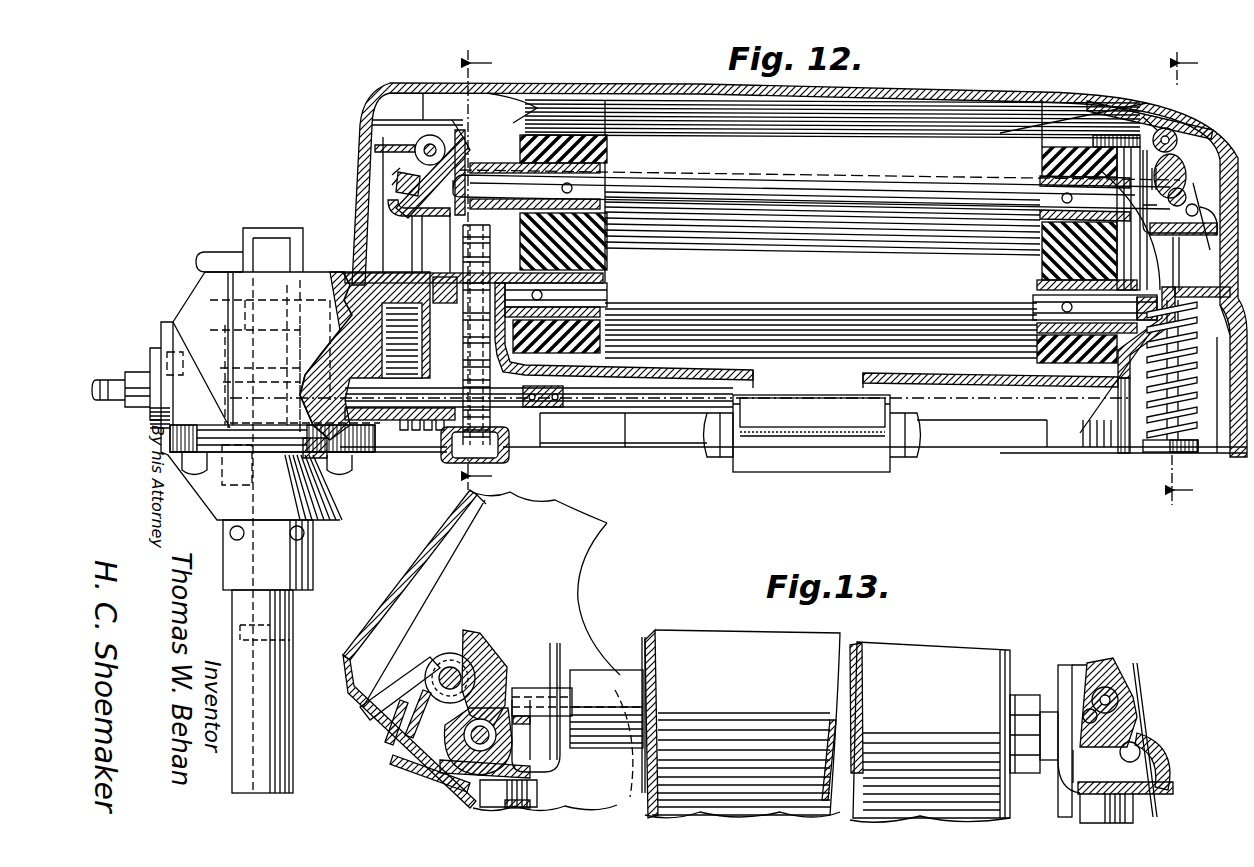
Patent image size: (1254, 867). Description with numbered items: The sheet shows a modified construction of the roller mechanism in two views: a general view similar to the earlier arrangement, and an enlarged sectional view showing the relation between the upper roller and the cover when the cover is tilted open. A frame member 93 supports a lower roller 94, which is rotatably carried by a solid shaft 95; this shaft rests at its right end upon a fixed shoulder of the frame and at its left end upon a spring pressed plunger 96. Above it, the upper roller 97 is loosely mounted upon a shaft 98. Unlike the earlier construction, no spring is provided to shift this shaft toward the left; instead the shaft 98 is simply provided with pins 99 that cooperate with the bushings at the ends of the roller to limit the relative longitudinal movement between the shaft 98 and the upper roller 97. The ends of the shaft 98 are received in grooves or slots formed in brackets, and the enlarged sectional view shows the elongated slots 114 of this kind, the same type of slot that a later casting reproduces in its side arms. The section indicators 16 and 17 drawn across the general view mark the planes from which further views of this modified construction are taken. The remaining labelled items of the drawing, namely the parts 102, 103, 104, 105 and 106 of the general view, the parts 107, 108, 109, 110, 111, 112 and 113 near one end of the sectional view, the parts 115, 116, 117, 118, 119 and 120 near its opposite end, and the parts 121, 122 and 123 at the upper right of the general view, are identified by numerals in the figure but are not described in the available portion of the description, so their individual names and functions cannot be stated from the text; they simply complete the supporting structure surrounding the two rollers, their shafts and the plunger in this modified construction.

In FIG. 12, the section line 16- 16 is at (1195, 280).
In FIG. 12, the section line 17- 17 is at (491, 268).
In FIG. 12, the frame member 93 is at (1045, 421).
In FIG. 12, the lower roller 94 is at (820, 197).
In FIG. 13, the lower roller 94 is at (650, 805).
In FIG. 12, the solid shaft 95 is at (1040, 301).
In FIG. 12, the spring pressed plunger 96 is at (350, 300).
In FIG. 12, the upper roller 97 is at (643, 145).
In FIG. 13, the upper roller 97 is at (709, 620).
In FIG. 12, the shaft 98 is at (594, 187).
In FIG. 13, the shaft 98 is at (541, 698).
In FIG. 12, the pins 99 is at (603, 167).
In FIG. 12, the rod 102 is at (1153, 414).
In FIG. 12, the spring seat 103 is at (1150, 452).
In FIG. 12, the spring 104 is at (1147, 392).
In FIG. 12, the brush 105 is at (380, 193).
In FIG. 13, the brush 105 is at (526, 762).
In FIG. 12, the brush holder bracket 106 is at (455, 135).
In FIG. 13, the housing 107 is at (578, 560).
In FIG. 13, the brush holder 108 is at (508, 731).
In FIG. 13, the clamp bar 109 is at (430, 770).
In FIG. 13, the bracket 110 is at (413, 706).
In FIG. 13, the pivot 111 is at (442, 653).
In FIG. 13, the end plate 112 is at (503, 663).
In FIG. 13, the clamp strip 113 is at (409, 762).
In FIG. 13, the slots 114 is at (487, 657).
In FIG. 13, the pin 115 is at (1080, 717).
In FIG. 13, the brush holder block 116 is at (1122, 687).
In FIG. 13, the pivot pin 117 is at (1127, 701).
In FIG. 13, the end plate 118 is at (1083, 703).
In FIG. 13, the spring hook 119 is at (1127, 734).
In FIG. 13, the base plate 120 is at (1080, 668).
In FIG. 12, the brush holder 121 is at (1148, 138).
In FIG. 12, the spring plate 122 is at (1045, 126).
In FIG. 12, the housing cover 123 is at (420, 95).